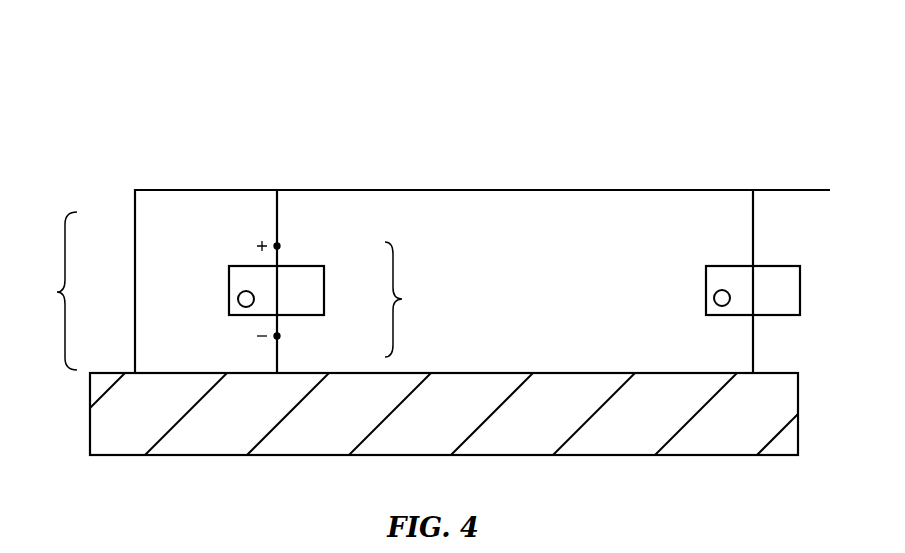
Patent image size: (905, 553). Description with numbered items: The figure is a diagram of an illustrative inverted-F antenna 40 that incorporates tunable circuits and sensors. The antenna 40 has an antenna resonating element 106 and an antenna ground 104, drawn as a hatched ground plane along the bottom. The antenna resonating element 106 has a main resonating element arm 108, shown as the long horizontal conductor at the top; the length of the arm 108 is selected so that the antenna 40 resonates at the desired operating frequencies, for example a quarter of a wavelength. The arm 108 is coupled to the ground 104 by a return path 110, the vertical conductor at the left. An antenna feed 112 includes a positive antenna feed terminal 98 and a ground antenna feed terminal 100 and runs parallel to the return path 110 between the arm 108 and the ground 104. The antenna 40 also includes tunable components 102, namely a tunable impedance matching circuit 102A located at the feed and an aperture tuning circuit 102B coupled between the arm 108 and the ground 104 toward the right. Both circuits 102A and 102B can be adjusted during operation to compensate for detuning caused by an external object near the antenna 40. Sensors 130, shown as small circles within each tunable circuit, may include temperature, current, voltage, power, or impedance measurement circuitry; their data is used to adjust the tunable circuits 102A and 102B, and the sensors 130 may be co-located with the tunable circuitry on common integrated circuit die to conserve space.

The inverted-F antenna 40 is at (641, 75).
The main resonating element arm 108 is at (540, 189).
The return path 110 is at (136, 300).
The antenna resonating element 106 is at (49, 291).
The antenna feed 112 is at (410, 299).
The tunable components 102 is at (343, 267).
The tunable impedance matching circuit 102A is at (248, 266).
The aperture tuning circuit 102B is at (773, 266).
The positive antenna feed terminal 98 is at (280, 246).
The ground antenna feed terminal 100 is at (280, 336).
The sensors 130 is at (246, 308).
The antenna ground 104 is at (90, 415).